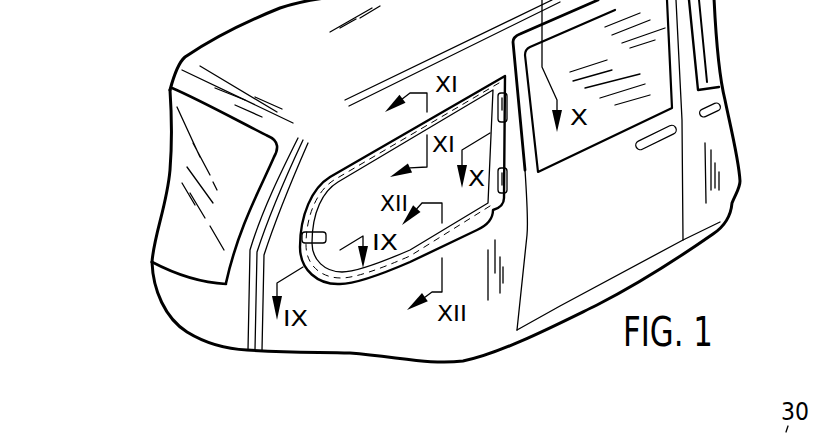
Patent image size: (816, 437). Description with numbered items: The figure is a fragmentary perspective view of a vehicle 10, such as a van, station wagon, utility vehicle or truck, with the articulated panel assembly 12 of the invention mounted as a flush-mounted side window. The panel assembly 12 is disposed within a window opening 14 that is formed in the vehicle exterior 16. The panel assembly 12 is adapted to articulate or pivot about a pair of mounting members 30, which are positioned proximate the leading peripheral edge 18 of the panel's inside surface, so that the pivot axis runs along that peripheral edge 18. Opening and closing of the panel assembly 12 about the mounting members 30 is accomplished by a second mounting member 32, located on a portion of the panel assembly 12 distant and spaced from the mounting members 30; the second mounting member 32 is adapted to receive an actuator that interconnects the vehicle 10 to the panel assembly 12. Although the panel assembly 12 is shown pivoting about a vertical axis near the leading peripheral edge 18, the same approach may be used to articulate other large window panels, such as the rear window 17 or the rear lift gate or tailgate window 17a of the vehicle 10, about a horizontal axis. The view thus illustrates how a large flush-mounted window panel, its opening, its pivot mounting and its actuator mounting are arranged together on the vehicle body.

The vehicle 10 is at (406, 48).
The panel assembly 12 is at (507, 198).
The window opening 14 is at (329, 275).
The vehicle exterior 16 is at (346, 126).
The rear window 17 is at (171, 206).
The tailgate window 17a is at (165, 245).
The peripheral edge 18 is at (527, 142).
The mounting members 30 is at (527, 180).
The second mounting member 32 is at (302, 238).